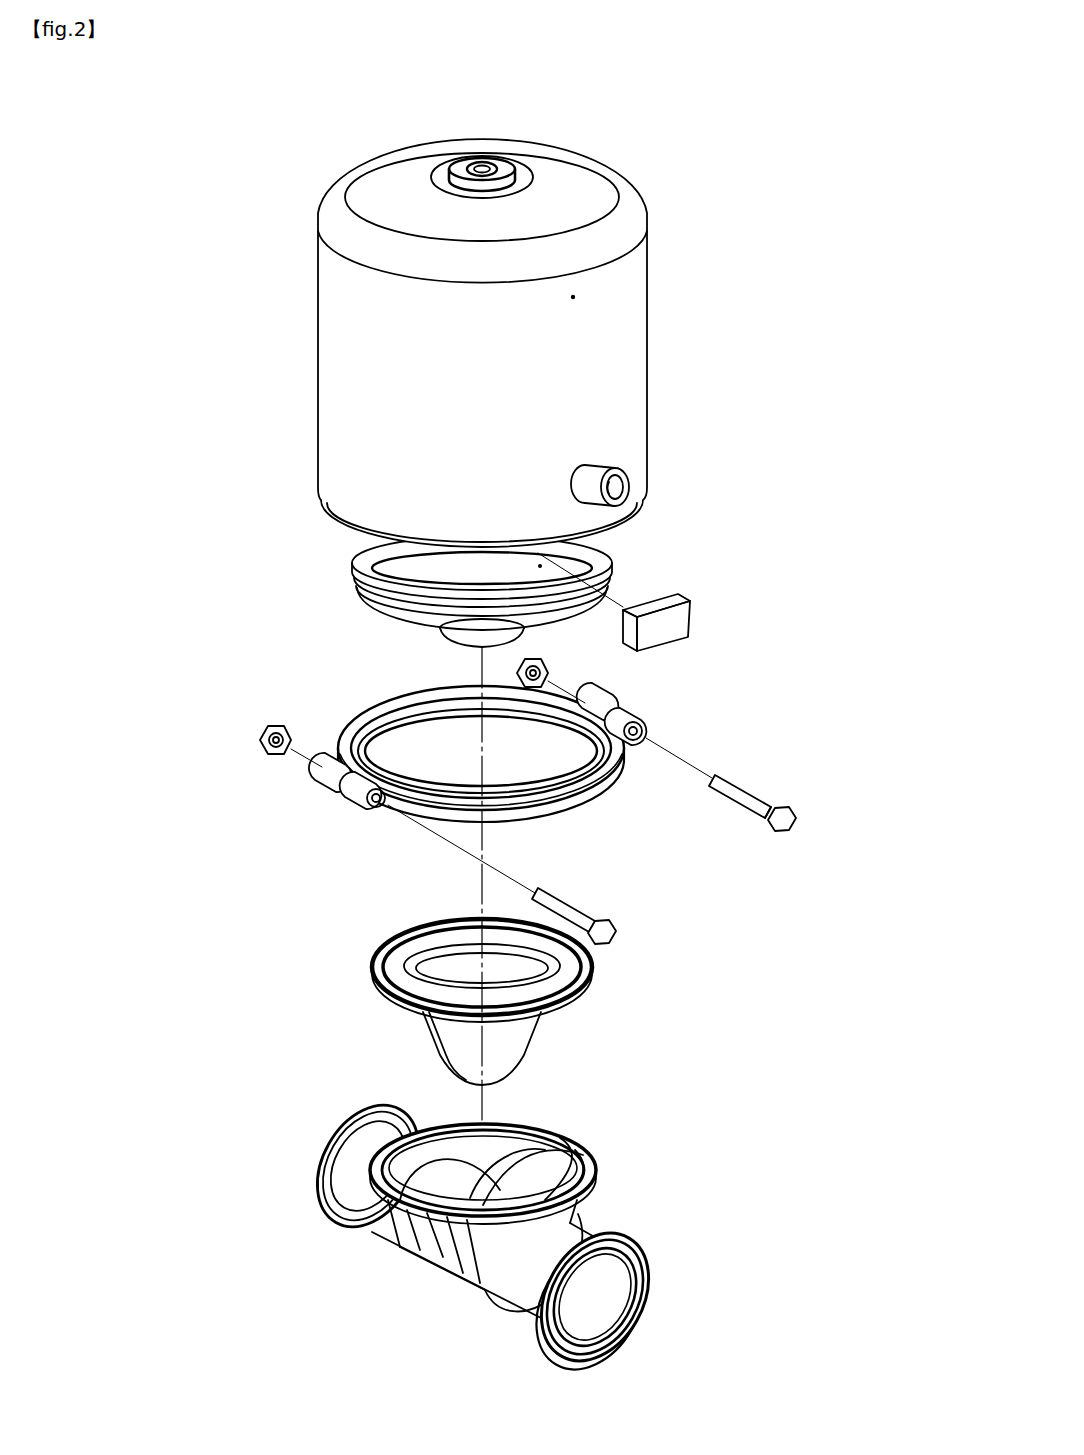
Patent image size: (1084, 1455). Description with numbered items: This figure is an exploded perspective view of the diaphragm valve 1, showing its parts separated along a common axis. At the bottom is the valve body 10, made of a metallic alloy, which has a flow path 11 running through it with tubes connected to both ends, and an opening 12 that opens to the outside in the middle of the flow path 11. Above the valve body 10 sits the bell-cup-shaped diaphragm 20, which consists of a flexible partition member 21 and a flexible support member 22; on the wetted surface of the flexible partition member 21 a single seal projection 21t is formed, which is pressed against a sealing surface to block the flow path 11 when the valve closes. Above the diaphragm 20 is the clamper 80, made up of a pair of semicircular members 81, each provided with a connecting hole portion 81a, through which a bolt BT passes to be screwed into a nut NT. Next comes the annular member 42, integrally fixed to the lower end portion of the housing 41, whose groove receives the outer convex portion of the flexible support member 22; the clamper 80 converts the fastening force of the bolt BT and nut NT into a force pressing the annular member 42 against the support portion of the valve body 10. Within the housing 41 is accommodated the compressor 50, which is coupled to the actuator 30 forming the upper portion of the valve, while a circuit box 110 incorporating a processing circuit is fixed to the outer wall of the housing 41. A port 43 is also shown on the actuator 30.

The diaphragm valve 1 is at (703, 178).
The actuator 30 is at (653, 302).
The port 43 is at (612, 477).
The annular member 42 is at (355, 561).
The housing 41 is at (418, 566).
The compressor 50 is at (450, 641).
The circuit box 110 is at (700, 606).
The clamper 80 is at (502, 793).
The semicircular member 81 is at (378, 702).
The connecting hole portion 81a is at (606, 699).
The nut NT is at (262, 745).
The bolt BT is at (757, 791).
The diaphragm 20 is at (524, 978).
The flexible support member 22 is at (406, 952).
The flexible partition member 21 is at (522, 1035).
The seal projection 21t is at (435, 1041).
The valve body 10 is at (504, 1237).
The opening 12 is at (560, 1150).
The flow path 11 is at (622, 1273).